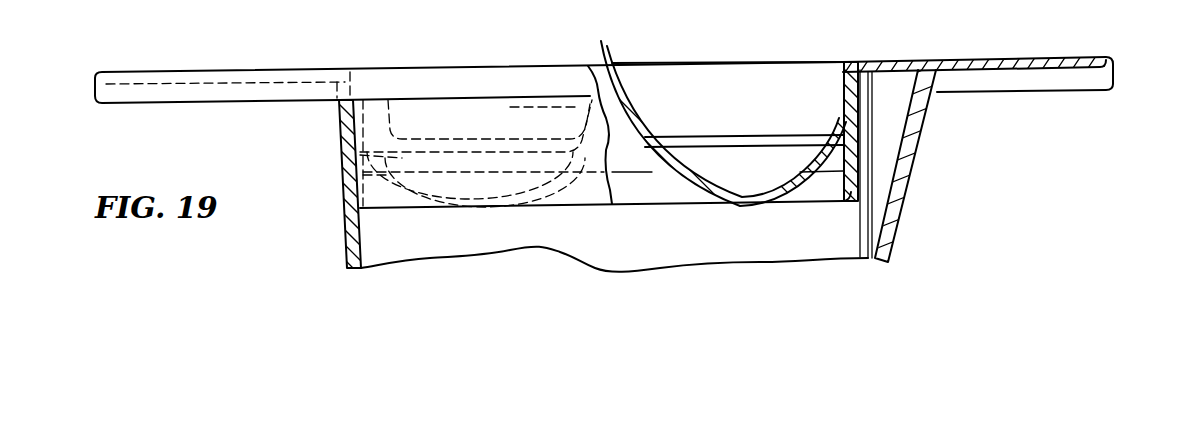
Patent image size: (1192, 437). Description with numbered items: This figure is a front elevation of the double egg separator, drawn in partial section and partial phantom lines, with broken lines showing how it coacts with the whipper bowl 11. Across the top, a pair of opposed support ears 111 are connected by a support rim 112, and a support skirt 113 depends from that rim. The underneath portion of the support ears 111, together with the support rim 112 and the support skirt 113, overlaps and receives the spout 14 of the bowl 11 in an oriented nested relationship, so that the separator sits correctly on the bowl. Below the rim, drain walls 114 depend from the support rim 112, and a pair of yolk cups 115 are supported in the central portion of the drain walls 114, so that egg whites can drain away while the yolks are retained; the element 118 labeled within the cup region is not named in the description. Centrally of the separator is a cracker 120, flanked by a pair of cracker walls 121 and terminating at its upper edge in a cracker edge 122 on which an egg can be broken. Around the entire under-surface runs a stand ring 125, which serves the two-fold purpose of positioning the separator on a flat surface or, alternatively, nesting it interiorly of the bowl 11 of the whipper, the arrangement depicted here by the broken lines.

The bowl 11 is at (340, 243).
The spout 14 is at (918, 152).
The support ears 111 is at (155, 72).
The support rim 112 is at (450, 68).
The support skirt 113 is at (1111, 68).
The drain walls 114 is at (386, 67).
The yolk cups 115 is at (372, 154).
The cavity 118 is at (478, 168).
The cracker 120 is at (608, 54).
The cracker walls 121 is at (660, 112).
The cracker edge 122 is at (603, 44).
The stand ring 125 is at (852, 188).